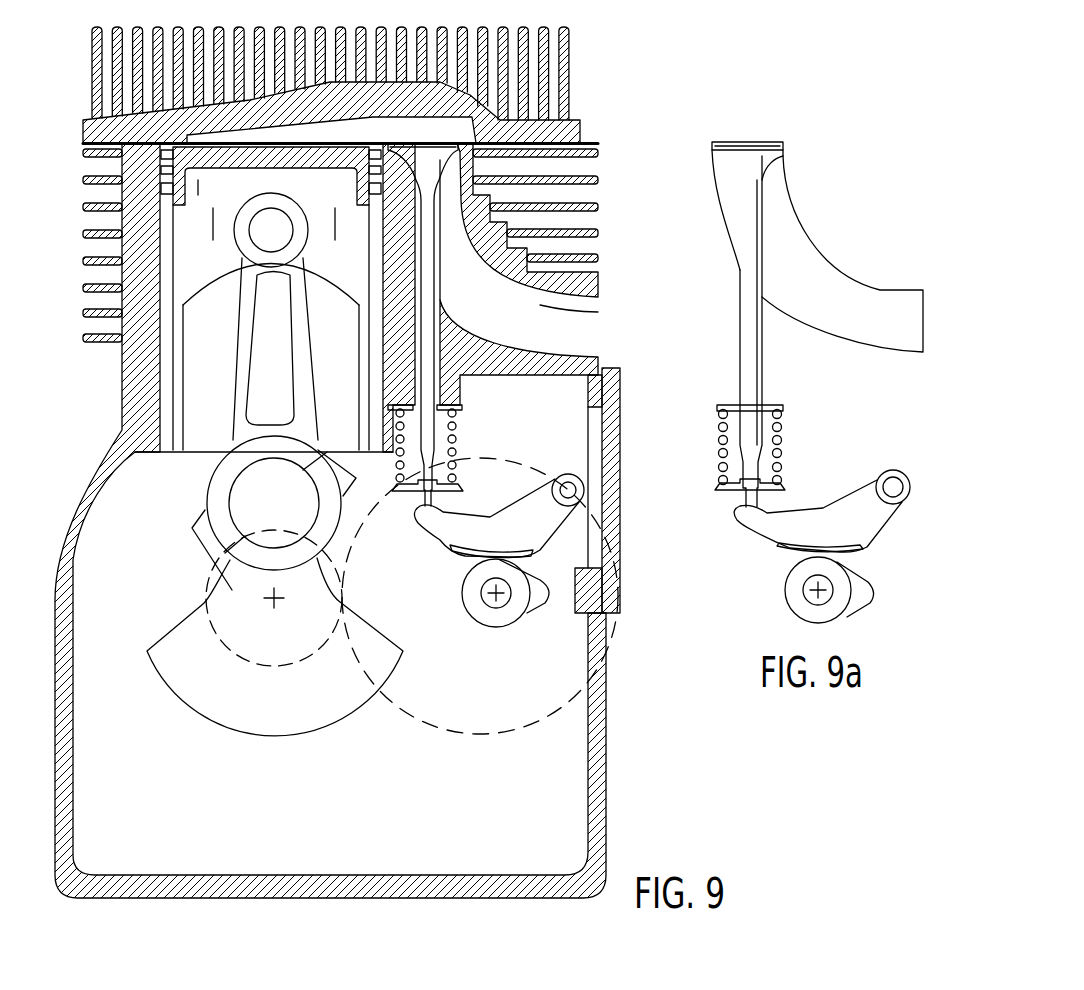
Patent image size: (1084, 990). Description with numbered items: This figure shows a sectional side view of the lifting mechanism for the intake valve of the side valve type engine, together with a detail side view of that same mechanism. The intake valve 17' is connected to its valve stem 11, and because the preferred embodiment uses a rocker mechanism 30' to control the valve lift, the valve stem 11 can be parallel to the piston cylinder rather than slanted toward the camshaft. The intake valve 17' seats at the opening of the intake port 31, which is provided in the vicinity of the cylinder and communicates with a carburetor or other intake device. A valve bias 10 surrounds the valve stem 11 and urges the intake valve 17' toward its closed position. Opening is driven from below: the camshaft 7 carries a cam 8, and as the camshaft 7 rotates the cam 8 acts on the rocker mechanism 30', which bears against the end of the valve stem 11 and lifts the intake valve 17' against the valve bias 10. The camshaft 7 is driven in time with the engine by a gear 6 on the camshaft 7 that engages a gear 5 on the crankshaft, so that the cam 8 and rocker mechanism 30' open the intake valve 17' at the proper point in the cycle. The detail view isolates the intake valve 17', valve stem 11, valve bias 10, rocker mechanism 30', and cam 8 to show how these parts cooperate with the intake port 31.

In FIG. 9, the gear 5 is at (305, 660).
In FIG. 9, the gear 6 is at (497, 735).
In FIG. 9, the camshaft 7 is at (488, 604).
In FIG. 9, the cam 8 is at (537, 600).
In FIG. 9A, the cam 8 is at (862, 597).
In FIG. 9A, the valve bias 10 is at (780, 440).
In FIG. 9A, the valve stem 11 is at (757, 358).
In FIG. 9A, the intake valve 17' is at (770, 174).
In FIG. 9, the rocker mechanism 30' is at (545, 511).
In FIG. 9A, the rocker mechanism 30' is at (811, 534).
In FIG. 9, the intake port 31 is at (588, 325).
In FIG. 9A, the intake port 31 is at (800, 253).